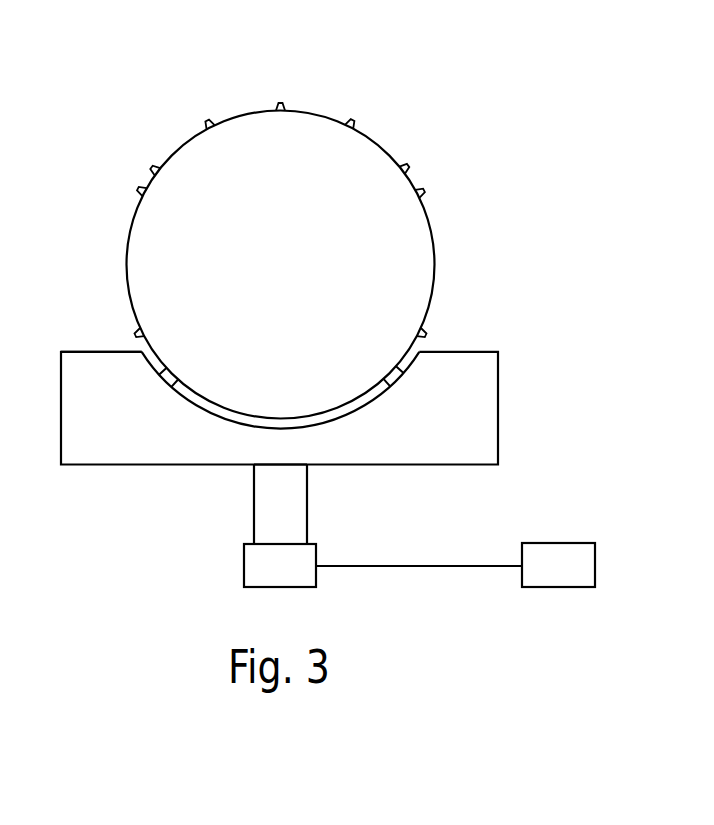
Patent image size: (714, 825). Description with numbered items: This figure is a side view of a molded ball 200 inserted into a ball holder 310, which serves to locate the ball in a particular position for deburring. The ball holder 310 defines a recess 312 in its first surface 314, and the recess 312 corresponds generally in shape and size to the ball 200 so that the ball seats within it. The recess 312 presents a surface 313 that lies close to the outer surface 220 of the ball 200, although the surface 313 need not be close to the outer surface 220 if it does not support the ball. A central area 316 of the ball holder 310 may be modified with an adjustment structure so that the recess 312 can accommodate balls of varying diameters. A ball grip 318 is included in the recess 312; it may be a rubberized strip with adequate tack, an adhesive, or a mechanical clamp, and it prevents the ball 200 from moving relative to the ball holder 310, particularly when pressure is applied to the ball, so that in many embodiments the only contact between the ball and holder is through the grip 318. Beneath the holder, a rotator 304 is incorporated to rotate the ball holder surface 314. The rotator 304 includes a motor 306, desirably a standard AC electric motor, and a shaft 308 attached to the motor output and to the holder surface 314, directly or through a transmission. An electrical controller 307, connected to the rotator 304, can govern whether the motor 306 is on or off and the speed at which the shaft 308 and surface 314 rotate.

The ball 200 is at (327, 93).
The outer surface 220 is at (437, 262).
The rotator 304 is at (237, 528).
The motor 306 is at (317, 575).
The electrical controller 307 is at (568, 543).
The shaft 308 is at (308, 516).
The ball holder 310 is at (520, 400).
The recess 312 is at (377, 397).
The surface 313 is at (211, 412).
The first surface 314 is at (82, 351).
The central area 316 is at (300, 445).
The ball grip 318 is at (400, 370).